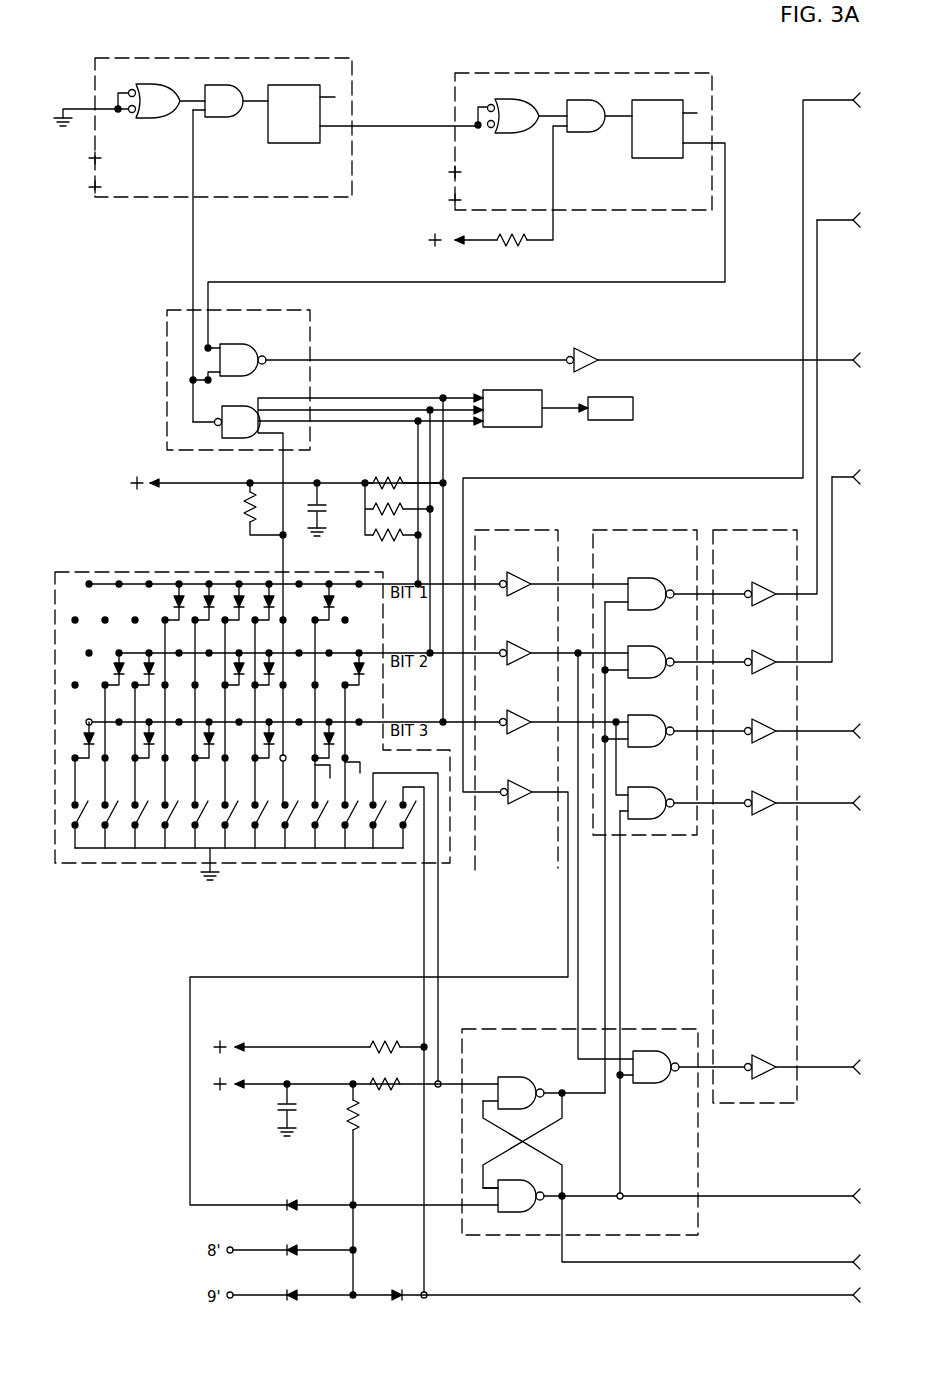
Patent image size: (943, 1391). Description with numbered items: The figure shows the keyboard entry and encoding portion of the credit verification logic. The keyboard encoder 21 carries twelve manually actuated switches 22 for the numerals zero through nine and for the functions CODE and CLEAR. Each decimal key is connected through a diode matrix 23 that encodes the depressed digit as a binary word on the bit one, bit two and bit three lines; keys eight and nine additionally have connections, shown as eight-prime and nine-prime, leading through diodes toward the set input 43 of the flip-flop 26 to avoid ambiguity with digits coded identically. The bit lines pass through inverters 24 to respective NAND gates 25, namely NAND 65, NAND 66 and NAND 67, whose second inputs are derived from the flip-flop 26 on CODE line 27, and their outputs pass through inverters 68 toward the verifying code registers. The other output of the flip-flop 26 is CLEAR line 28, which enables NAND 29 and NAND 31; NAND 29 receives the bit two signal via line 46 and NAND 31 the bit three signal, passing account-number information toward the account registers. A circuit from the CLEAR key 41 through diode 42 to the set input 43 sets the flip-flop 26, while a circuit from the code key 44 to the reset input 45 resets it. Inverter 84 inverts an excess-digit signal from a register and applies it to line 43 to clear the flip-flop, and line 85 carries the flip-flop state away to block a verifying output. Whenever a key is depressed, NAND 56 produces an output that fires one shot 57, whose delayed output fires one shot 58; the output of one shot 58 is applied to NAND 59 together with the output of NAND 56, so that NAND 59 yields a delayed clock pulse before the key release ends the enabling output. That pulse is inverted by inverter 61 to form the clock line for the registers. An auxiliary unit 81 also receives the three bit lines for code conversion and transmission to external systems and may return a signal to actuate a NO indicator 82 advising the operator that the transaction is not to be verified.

The one shot 57 is at (233, 188).
The one shot 58 is at (597, 200).
The NAND gate 59 is at (240, 358).
The NAND gate 56 is at (243, 442).
The inverter 61 is at (588, 352).
The auxiliary unit 81 is at (505, 427).
The NO indicator 82 is at (606, 420).
The keyboard encoder 21 is at (70, 574).
The diode matrix 23 is at (115, 633).
The manually actuated switches 22 is at (91, 834).
The code key 44 is at (378, 801).
The CLEAR key 41 is at (407, 832).
The inverters 24 is at (532, 540).
The inverter 84 is at (515, 804).
The NAND gates 25 is at (660, 540).
The NAND gate 65 is at (645, 585).
The NAND gate 66 is at (645, 655).
The NAND gate 67 is at (645, 725).
The NAND gate 31 is at (645, 797).
The line 46 is at (578, 1004).
The inverters 68 is at (785, 540).
The reset input 45 is at (478, 1082).
The CODE line 27 is at (588, 1090).
The flip-flop 26 is at (540, 1146).
The NAND gate 29 is at (648, 1083).
The set input 43 is at (472, 1208).
The CLEAR line 28 is at (645, 1198).
The line 85 is at (737, 1264).
The diode 42 is at (396, 1288).